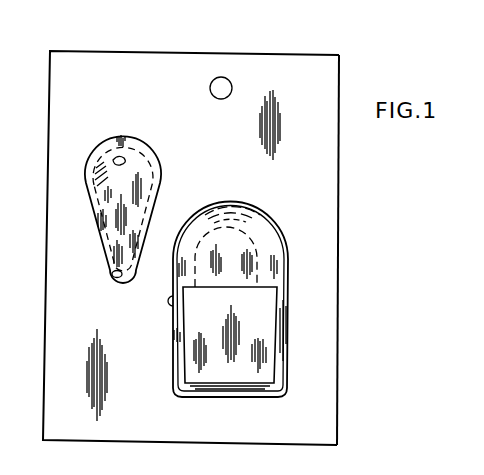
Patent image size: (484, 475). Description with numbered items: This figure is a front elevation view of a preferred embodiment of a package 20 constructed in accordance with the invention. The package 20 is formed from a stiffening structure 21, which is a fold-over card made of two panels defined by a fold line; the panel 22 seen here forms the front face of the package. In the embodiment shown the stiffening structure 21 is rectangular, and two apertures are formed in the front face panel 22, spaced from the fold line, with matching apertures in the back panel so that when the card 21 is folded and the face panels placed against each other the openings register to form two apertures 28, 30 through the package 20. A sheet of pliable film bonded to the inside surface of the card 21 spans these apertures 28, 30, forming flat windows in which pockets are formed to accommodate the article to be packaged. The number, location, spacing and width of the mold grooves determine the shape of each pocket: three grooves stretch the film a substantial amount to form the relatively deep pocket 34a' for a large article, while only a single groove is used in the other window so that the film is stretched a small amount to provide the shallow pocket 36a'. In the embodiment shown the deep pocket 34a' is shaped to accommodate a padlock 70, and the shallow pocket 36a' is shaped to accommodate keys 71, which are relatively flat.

The package 20 is at (161, 38).
The stiffening structure 21 is at (283, 48).
The front face panel 22 is at (333, 244).
The aperture 28 is at (170, 306).
The aperture 30 is at (112, 276).
The pocket 34a' is at (255, 247).
The shallow pocket 36a' is at (139, 204).
The padlock 70 is at (283, 333).
The keys 71 is at (158, 176).